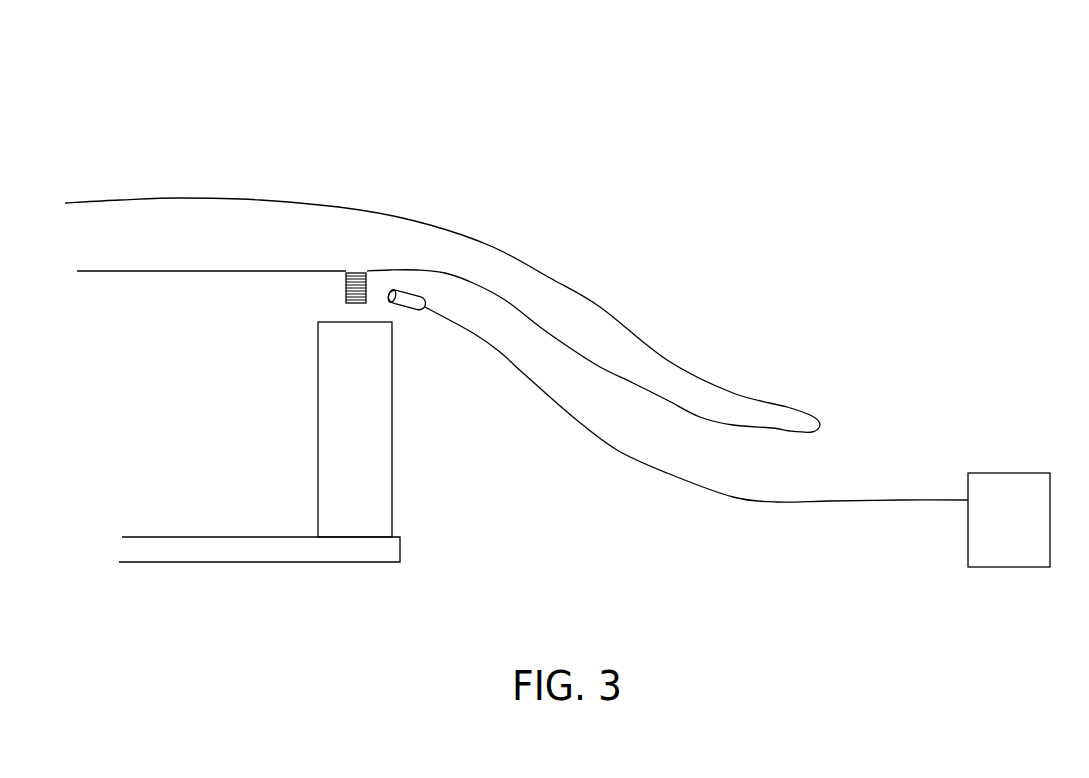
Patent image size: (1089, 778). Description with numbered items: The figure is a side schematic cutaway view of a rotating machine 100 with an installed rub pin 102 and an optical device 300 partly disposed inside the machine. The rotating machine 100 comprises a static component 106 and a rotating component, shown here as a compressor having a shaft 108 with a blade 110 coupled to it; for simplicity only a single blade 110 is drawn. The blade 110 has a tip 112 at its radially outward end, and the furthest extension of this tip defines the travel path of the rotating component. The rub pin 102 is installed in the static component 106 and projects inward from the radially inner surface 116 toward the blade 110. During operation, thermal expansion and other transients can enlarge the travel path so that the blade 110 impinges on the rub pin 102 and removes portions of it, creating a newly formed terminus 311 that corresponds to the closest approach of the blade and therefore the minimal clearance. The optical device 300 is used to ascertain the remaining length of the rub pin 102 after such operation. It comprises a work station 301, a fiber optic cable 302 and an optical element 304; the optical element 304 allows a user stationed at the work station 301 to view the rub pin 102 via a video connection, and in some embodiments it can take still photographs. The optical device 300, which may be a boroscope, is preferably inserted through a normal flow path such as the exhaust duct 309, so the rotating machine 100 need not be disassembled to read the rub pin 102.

The rotating machine 100 is at (123, 138).
The static component 106 is at (283, 225).
The radially inner surface 116 is at (213, 272).
The rub pin 102 is at (343, 288).
The terminus 311 is at (357, 303).
The optical element 304 is at (418, 311).
The tip 112 is at (337, 321).
The blade 110 is at (370, 480).
The shaft 108 is at (387, 553).
The fiber optic cable 302 is at (777, 502).
The exhaust duct 309 is at (655, 542).
The work station 301 is at (1026, 532).
The optical device 300 is at (890, 463).